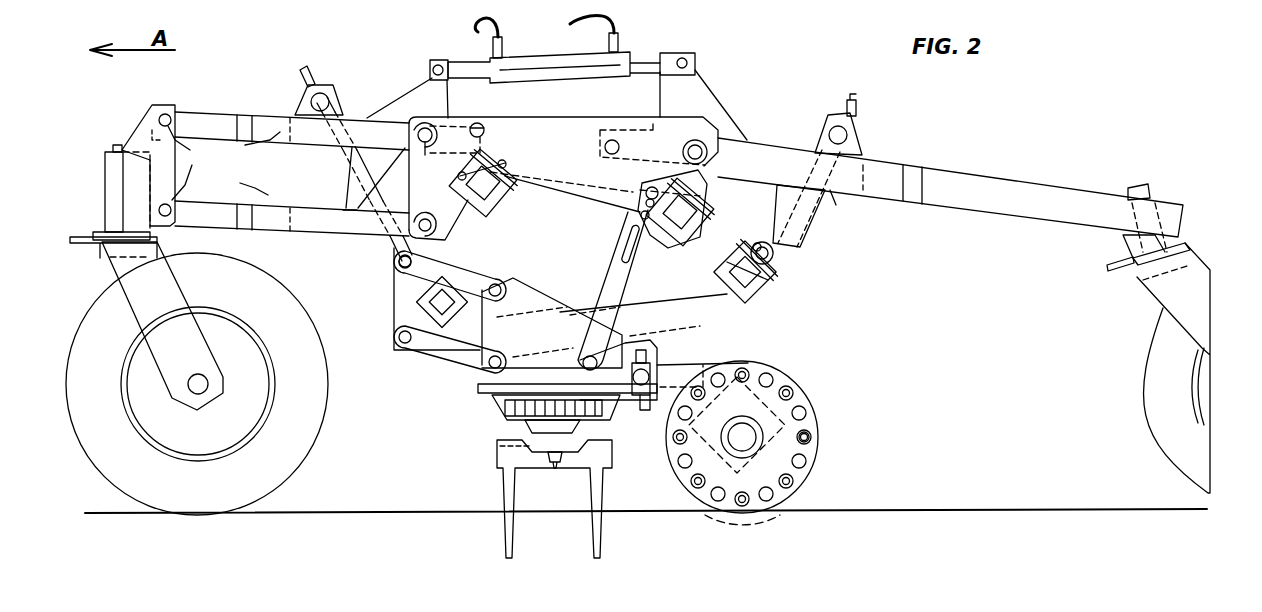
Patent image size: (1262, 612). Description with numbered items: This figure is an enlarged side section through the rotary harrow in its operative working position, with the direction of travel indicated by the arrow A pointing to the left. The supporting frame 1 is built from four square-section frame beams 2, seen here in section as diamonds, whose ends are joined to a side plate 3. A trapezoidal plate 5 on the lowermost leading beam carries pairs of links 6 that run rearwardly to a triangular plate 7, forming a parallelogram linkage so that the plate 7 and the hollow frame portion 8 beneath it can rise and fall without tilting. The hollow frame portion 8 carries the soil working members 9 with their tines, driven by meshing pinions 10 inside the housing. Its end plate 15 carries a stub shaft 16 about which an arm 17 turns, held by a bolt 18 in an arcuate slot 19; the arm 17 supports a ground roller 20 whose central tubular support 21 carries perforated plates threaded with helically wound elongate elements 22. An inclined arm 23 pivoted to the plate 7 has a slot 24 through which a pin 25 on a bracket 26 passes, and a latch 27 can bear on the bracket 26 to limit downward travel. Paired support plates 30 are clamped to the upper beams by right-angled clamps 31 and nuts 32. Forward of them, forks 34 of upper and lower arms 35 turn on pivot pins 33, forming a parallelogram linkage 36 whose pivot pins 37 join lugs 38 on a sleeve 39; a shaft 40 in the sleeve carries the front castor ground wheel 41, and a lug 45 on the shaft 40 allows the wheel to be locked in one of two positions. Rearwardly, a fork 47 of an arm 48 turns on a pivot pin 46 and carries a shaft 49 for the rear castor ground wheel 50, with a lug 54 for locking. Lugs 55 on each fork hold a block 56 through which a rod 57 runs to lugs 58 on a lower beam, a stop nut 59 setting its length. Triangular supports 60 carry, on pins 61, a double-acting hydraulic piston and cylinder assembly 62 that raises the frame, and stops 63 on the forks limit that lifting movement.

The supporting frame 1 is at (675, 304).
The frame beam 2 is at (497, 190).
The side plate 3 is at (718, 296).
The plate 5 is at (394, 300).
The link 6 is at (395, 270).
The plate 7 is at (545, 292).
The hollow frame portion 8 is at (507, 412).
The soil working member 9 is at (557, 502).
The pinion 10 is at (537, 430).
The end plate 15 is at (628, 345).
The stub shaft 16 is at (478, 393).
The arm 17 is at (700, 365).
The bolt 18 is at (652, 360).
The arcuate slot 19 is at (645, 412).
The ground roller 20 is at (812, 396).
The central tubular support 21 is at (756, 452).
The elongate element 22 is at (810, 440).
The arm 23 is at (610, 292).
The slot 24 is at (622, 254).
The pin 25 is at (640, 218).
The bracket 26 is at (672, 245).
The latch 27 is at (600, 204).
The support plate 30 is at (575, 105).
The right-angled clamp 31 is at (500, 210).
The nut 32 is at (502, 160).
The pivot pin 33 is at (430, 150).
The fork 34 is at (245, 160).
The arm 35 is at (262, 116).
The parallelogram linkage 36 is at (283, 187).
The pivot pin 37 is at (192, 163).
The lug 38 is at (150, 110).
The sleeve 39 is at (105, 168).
The shaft 40 is at (116, 145).
The castor ground wheel 41 is at (288, 486).
The lug 45 is at (80, 248).
The pivot pin 46 is at (707, 148).
The fork 47 is at (877, 200).
The arm 48 is at (1050, 175).
The shaft 49 is at (1140, 184).
The castor ground wheel 50 is at (1142, 375).
The lug 54 is at (1107, 268).
The lug 55 is at (333, 83).
The block 56 is at (329, 100).
The rod 57 is at (400, 255).
The lug 58 is at (423, 300).
The nut 59 is at (300, 75).
The support 60 is at (415, 80).
The pin 61 is at (440, 58).
The hydraulic piston and cylinder assembly 62 is at (560, 58).
The stop 63 is at (348, 180).